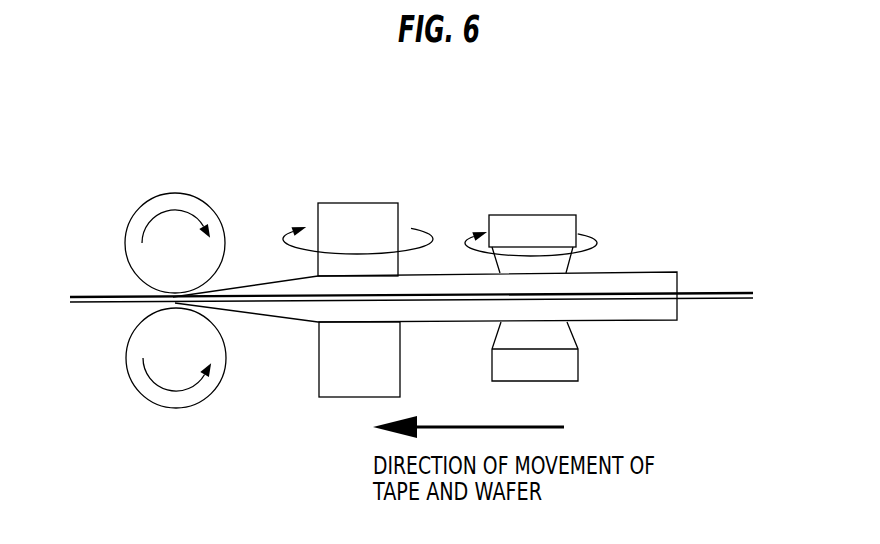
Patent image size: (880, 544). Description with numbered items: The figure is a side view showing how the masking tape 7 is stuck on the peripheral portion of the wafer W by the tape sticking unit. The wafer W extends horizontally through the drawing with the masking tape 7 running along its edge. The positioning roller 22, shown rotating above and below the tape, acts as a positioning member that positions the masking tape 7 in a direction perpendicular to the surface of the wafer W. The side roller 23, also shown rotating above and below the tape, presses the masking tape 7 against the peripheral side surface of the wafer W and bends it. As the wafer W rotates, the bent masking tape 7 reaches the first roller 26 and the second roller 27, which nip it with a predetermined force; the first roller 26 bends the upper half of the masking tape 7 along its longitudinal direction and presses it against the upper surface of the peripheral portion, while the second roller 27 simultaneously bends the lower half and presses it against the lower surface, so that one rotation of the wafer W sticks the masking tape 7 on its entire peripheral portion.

The first roller 26 is at (175, 192).
The second roller 27 is at (177, 408).
The side roller 23 is at (367, 202).
The positioning roller 22 is at (528, 214).
The masking tape 7 is at (633, 272).
The wafer W is at (730, 292).